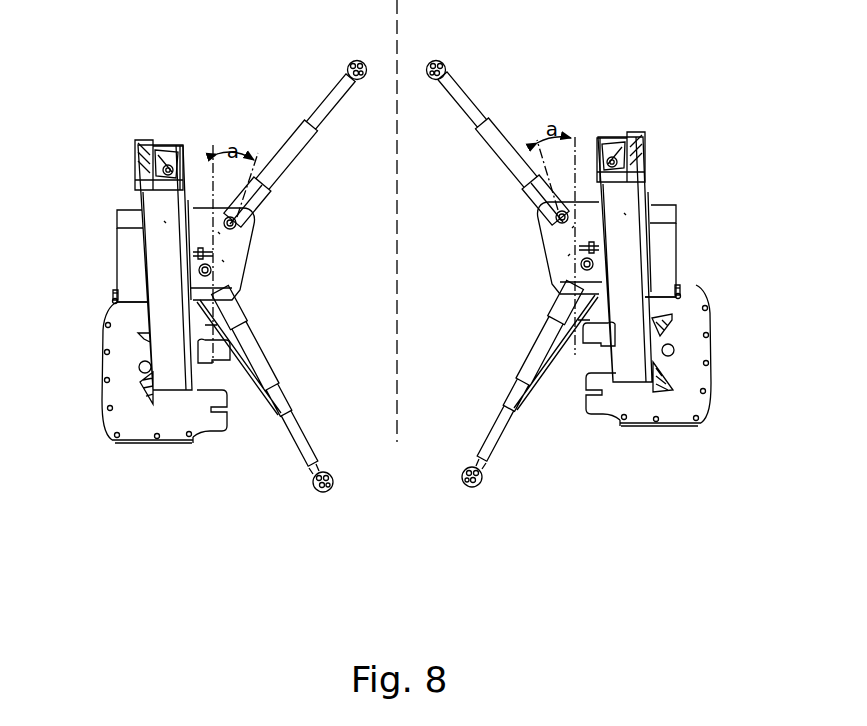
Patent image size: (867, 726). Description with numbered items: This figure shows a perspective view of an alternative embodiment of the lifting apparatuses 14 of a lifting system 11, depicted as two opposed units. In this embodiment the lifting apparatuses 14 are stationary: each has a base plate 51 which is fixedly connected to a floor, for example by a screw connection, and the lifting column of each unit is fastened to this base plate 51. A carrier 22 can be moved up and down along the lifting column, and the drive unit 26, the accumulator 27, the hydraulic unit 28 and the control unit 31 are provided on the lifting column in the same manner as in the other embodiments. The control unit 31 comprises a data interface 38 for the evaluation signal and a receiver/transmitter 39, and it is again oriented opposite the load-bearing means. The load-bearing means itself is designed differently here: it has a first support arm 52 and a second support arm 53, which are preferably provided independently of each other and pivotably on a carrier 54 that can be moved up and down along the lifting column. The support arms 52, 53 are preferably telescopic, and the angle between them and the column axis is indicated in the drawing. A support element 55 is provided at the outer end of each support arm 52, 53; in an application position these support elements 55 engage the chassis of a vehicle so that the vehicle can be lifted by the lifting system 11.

The lifting system 11 is at (188, 500).
The lifting apparatus 14 is at (100, 394).
The carrier 22 is at (126, 168).
The drive unit 26 is at (162, 128).
The accumulator 27 is at (117, 217).
The hydraulic unit 28 is at (107, 292).
The control unit 31 is at (108, 273).
The data interface 38 is at (117, 263).
The receiver/transmitter 39 is at (396, 290).
The base plate 51 is at (120, 452).
The first support arm 52 is at (309, 104).
The second support arm 53 is at (291, 377).
The carrier 54 is at (258, 265).
The support element 55 is at (351, 62).